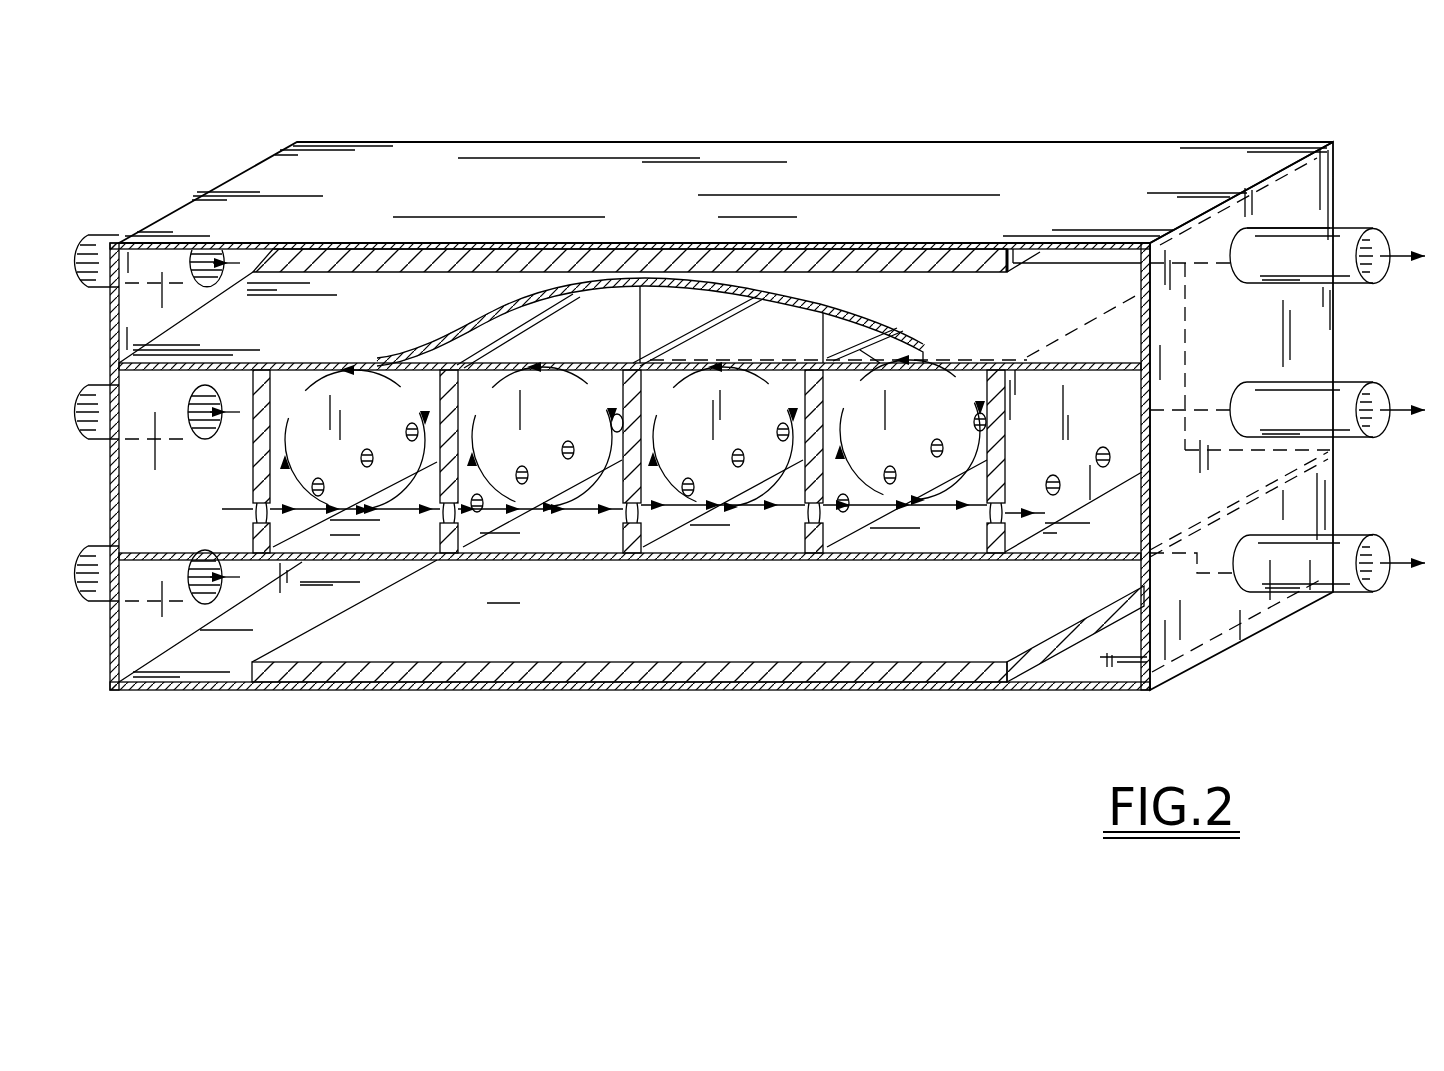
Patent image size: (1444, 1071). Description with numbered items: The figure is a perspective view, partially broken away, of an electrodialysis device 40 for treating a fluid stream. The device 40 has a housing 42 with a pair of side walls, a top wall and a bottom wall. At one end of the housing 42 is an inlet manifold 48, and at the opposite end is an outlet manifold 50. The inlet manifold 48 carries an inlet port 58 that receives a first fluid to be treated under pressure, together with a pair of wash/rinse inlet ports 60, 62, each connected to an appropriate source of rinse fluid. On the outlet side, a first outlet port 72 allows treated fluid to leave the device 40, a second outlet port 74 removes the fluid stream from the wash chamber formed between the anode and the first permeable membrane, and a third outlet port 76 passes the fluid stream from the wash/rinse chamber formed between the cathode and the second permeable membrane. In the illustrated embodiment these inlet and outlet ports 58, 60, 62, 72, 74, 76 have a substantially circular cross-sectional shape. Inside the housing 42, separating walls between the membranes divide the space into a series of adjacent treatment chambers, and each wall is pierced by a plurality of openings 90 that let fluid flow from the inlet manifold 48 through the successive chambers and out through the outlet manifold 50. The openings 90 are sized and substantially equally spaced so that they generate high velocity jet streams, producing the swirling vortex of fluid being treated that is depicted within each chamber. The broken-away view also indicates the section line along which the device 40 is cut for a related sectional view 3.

The section line 3- 3 is at (82, 95).
The electrodialysis device 40 is at (895, 118).
The housing 42 is at (425, 163).
The inlet manifold 48 is at (105, 698).
The outlet manifold 50 is at (1203, 615).
The inlet port 58 is at (88, 393).
The wash/rinse inlet port 60 is at (100, 248).
The wash/rinse inlet port 62 is at (88, 562).
The first outlet port 72 is at (1372, 395).
The second outlet port 74 is at (1372, 228).
The third outlet port 76 is at (1380, 545).
The openings 90 is at (406, 438).